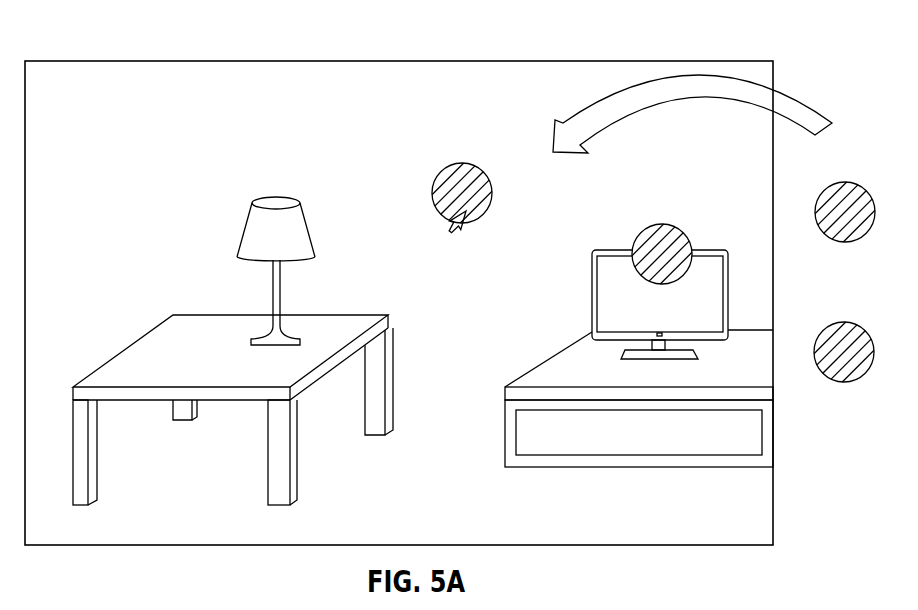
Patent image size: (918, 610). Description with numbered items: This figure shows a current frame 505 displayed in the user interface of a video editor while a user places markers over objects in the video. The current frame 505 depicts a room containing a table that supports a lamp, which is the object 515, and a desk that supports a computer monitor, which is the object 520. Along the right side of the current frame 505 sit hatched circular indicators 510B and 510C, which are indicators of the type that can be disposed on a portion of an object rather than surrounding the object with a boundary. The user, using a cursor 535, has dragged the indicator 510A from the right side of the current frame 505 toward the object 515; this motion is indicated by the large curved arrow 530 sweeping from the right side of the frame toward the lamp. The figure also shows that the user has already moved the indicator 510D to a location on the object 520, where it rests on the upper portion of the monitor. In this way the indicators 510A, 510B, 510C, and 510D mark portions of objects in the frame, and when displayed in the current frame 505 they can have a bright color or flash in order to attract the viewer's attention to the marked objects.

The current frame 505 is at (105, 45).
The indicator 510A is at (432, 193).
The indicator 510B is at (840, 243).
The indicator 510C is at (843, 383).
The indicator 510D is at (662, 225).
The object 515 is at (240, 233).
The object 520 is at (590, 295).
The arrow 530 is at (612, 93).
The cursor 535 is at (450, 237).